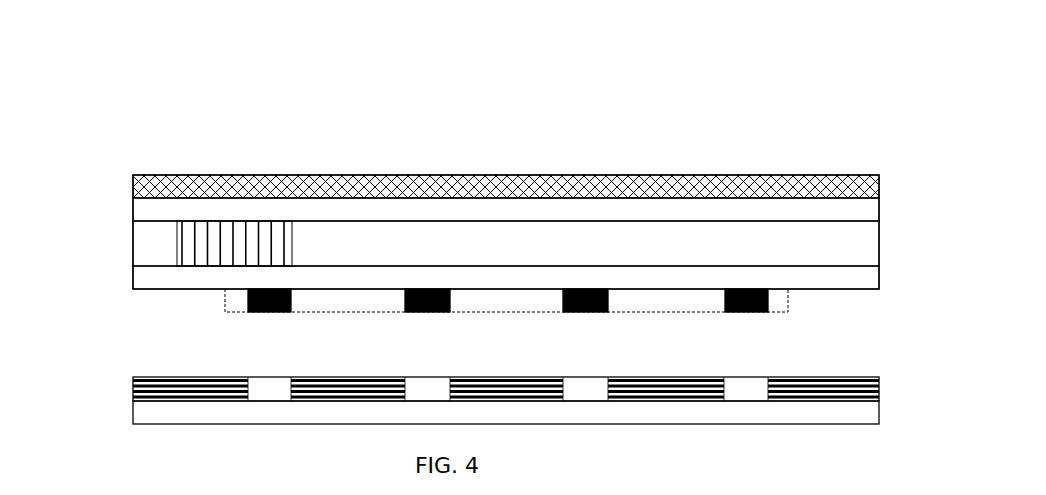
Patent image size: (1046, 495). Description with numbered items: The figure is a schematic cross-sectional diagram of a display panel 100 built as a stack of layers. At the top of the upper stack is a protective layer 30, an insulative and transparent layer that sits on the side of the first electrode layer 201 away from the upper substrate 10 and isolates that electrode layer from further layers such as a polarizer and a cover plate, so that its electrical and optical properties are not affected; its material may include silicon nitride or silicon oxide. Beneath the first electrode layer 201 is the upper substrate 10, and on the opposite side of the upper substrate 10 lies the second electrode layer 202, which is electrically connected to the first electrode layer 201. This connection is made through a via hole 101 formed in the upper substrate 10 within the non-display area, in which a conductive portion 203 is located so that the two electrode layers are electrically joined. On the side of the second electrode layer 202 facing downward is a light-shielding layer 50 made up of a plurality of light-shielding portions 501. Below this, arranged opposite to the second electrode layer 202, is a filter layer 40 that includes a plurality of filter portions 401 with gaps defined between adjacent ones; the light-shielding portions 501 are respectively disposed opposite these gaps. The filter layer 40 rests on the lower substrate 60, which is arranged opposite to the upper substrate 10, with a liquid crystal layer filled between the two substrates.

The display panel 100 is at (135, 131).
The via hole 101 is at (178, 242).
The conductive portion 203 is at (245, 230).
The protective layer 30 is at (868, 182).
The first electrode layer 201 is at (868, 215).
The upper substrate 10 is at (868, 249).
The second electrode layer 202 is at (868, 282).
The light-shielding portions 501 is at (768, 297).
The light-shielding layer 50 is at (788, 312).
The filter portions 401 is at (833, 390).
The filter layer 40 is at (880, 390).
The lower substrate 60 is at (868, 418).